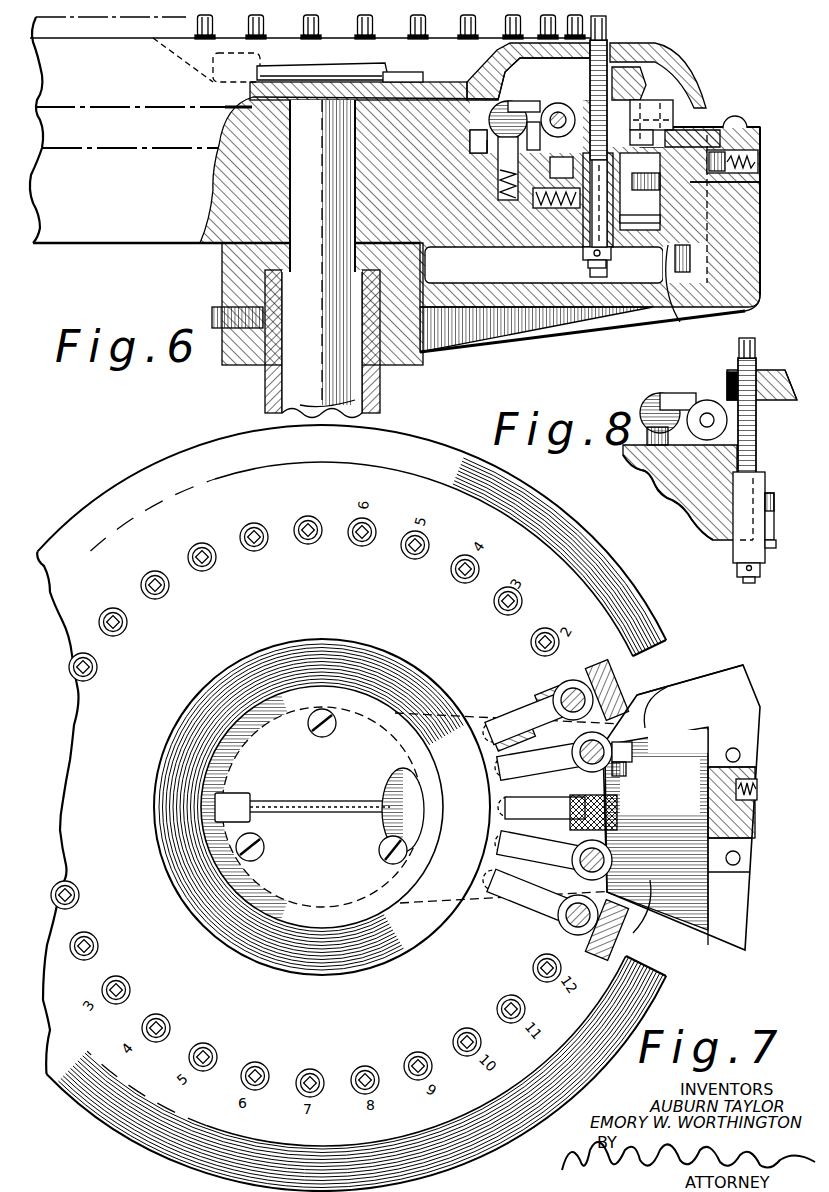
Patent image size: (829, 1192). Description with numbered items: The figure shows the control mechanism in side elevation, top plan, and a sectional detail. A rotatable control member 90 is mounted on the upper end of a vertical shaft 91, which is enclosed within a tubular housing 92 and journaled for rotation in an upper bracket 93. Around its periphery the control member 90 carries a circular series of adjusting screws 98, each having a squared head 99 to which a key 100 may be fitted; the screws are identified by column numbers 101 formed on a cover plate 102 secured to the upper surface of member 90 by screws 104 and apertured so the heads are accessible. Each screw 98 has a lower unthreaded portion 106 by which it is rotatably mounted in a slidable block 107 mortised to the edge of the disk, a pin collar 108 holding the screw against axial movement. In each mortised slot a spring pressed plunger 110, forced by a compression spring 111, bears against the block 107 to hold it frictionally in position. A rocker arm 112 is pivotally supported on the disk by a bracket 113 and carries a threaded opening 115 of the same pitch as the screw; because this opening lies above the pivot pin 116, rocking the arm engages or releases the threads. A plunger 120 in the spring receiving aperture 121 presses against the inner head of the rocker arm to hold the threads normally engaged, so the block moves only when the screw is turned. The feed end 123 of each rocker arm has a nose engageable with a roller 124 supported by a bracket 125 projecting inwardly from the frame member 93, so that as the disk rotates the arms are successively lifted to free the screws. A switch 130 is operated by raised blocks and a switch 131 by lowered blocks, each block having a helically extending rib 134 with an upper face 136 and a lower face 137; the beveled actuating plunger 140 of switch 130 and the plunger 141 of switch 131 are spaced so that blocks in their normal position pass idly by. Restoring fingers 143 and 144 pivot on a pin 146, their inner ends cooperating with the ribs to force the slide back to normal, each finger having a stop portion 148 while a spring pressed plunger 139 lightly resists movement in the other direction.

In FIG. 6, the rotatable control member 90 is at (182, 254).
In FIG. 8, the rotatable control member 90 is at (676, 505).
In FIG. 7, the rotatable control member 90 is at (142, 468).
In FIG. 6, the vertical shaft 91 is at (300, 181).
In FIG. 6, the tubular housing 92 is at (266, 386).
In FIG. 6, the upper bracket 93 is at (760, 205).
In FIG. 7, the upper bracket 93 is at (428, 936).
In FIG. 6, the adjusting screws 98 is at (610, 45).
In FIG. 8, the adjusting screws 98 is at (758, 441).
In FIG. 7, the adjusting screws 98 is at (496, 610).
In FIG. 6, the square heads 99 is at (458, 30).
In FIG. 8, the square heads 99 is at (757, 345).
In FIG. 7, the square heads 99 is at (502, 618).
In FIG. 6, the key 100 is at (348, 68).
In FIG. 7, the key 100 is at (330, 800).
In FIG. 7, the column numbers 101 is at (485, 548).
In FIG. 6, the cover plate 102 is at (670, 52).
In FIG. 7, the cover plate 102 is at (640, 622).
In FIG. 7, the screws 104 is at (320, 737).
In FIG. 6, the lower unthreaded portion 106 is at (590, 260).
In FIG. 8, the lower unthreaded portion 106 is at (750, 583).
In FIG. 6, the slidable block 107 is at (612, 252).
In FIG. 8, the slidable block 107 is at (733, 530).
In FIG. 7, the slidable block 107 is at (640, 757).
In FIG. 6, the pin collar 108 is at (590, 266).
In FIG. 8, the pin collar 108 is at (737, 569).
In FIG. 6, the spring pressed plunger 110 is at (556, 208).
In FIG. 6, the compression spring 111 is at (560, 178).
In FIG. 6, the rocker arm 112 is at (530, 105).
In FIG. 8, the rocker arm 112 is at (660, 400).
In FIG. 7, the rocker arm 112 is at (530, 700).
In FIG. 6, the bracket 113 is at (508, 200).
In FIG. 8, the bracket 113 is at (707, 413).
In FIG. 7, the bracket 113 is at (520, 712).
In FIG. 6, the threaded opening 115 is at (630, 84).
In FIG. 8, the threaded opening 115 is at (762, 372).
In FIG. 7, the threaded opening 115 is at (545, 688).
In FIG. 6, the pivot pin 116 is at (552, 110).
In FIG. 8, the pivot pin 116 is at (697, 410).
In FIG. 6, the plunger 120 is at (478, 153).
In FIG. 8, the plunger 120 is at (640, 462).
In FIG. 7, the plunger 120 is at (480, 772).
In FIG. 6, the spring receiving aperture 121 is at (487, 153).
In FIG. 6, the feed end 123 is at (660, 90).
In FIG. 8, the feed end 123 is at (790, 400).
In FIG. 7, the feed end 123 is at (612, 948).
In FIG. 6, the roller 124 is at (676, 96).
In FIG. 6, the bracket 125 is at (700, 135).
In FIG. 7, the switch 130 is at (700, 932).
In FIG. 7, the switch 131 is at (693, 685).
In FIG. 6, the helically extending rib 134 is at (620, 205).
In FIG. 8, the helically extending rib 134 is at (774, 526).
In FIG. 7, the helically extending rib 134 is at (614, 758).
In FIG. 6, the upper face 136 is at (620, 190).
In FIG. 8, the upper face 136 is at (774, 500).
In FIG. 7, the upper face 136 is at (626, 772).
In FIG. 6, the lower face 137 is at (620, 219).
In FIG. 8, the lower face 137 is at (776, 545).
In FIG. 6, the spring pressed plunger 139 is at (760, 133).
In FIG. 7, the spring pressed plunger 139 is at (755, 784).
In FIG. 7, the actuating plunger 140 is at (645, 918).
In FIG. 7, the plunger 141 is at (648, 700).
In FIG. 6, the finger 143 is at (760, 183).
In FIG. 7, the finger 143 is at (752, 874).
In FIG. 6, the finger 144 is at (681, 293).
In FIG. 6, the pin 146 is at (757, 165).
In FIG. 7, the pin 146 is at (757, 772).
In FIG. 7, the stop portion 148 is at (741, 857).